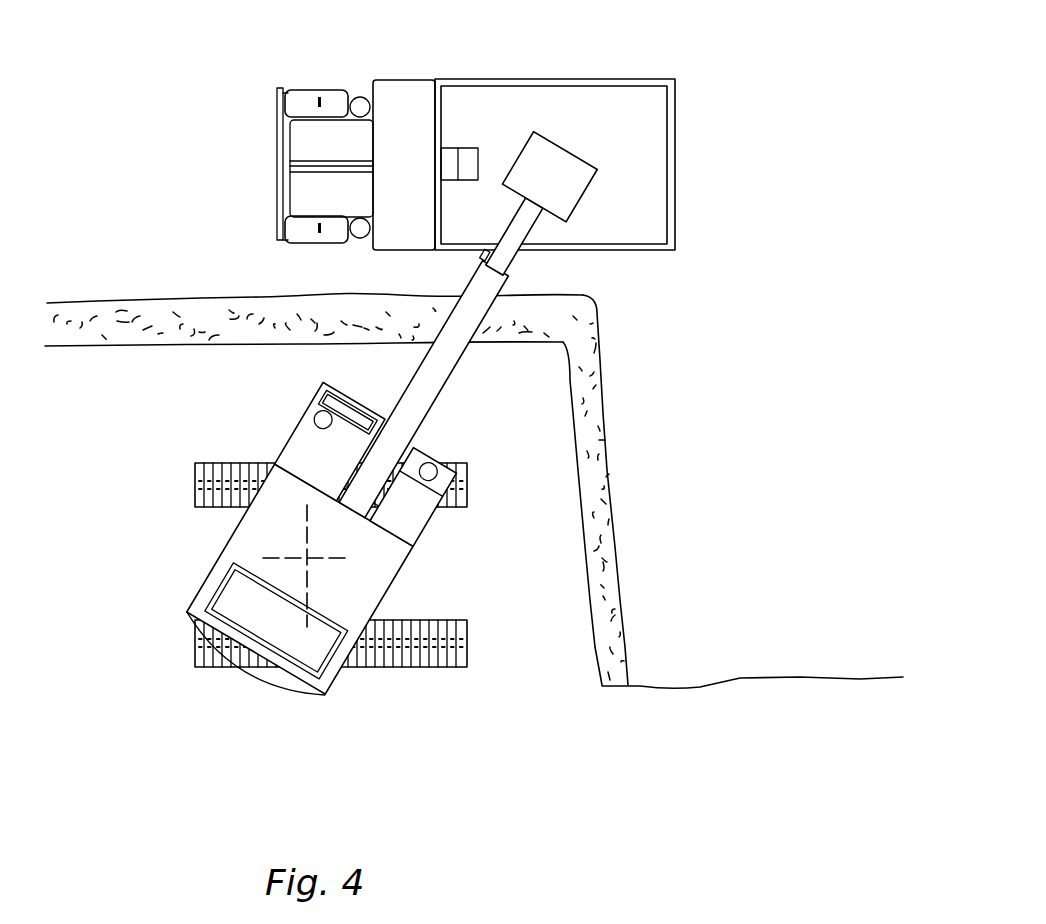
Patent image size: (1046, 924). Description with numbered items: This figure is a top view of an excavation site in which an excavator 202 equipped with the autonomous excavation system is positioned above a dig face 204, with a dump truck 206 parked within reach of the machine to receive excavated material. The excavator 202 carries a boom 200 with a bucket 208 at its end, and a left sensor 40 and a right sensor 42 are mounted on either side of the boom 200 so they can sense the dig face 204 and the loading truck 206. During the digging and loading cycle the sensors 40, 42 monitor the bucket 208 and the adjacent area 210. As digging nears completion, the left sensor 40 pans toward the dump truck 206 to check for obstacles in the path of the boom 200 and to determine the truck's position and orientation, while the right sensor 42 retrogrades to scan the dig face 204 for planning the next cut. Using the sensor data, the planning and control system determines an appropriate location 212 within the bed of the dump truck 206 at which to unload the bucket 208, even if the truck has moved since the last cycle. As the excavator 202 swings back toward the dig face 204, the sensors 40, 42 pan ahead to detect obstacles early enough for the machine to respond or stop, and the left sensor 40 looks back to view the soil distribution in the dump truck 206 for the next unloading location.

The left sensor 40 is at (311, 414).
The right sensor 42 is at (437, 463).
The boom 200 is at (432, 380).
The excavator 202 is at (207, 577).
The dig face 204 is at (613, 581).
The dump truck 206 is at (540, 164).
The bucket 208 is at (533, 153).
The adjacent area 210 is at (166, 168).
The unloading location 212 is at (640, 132).